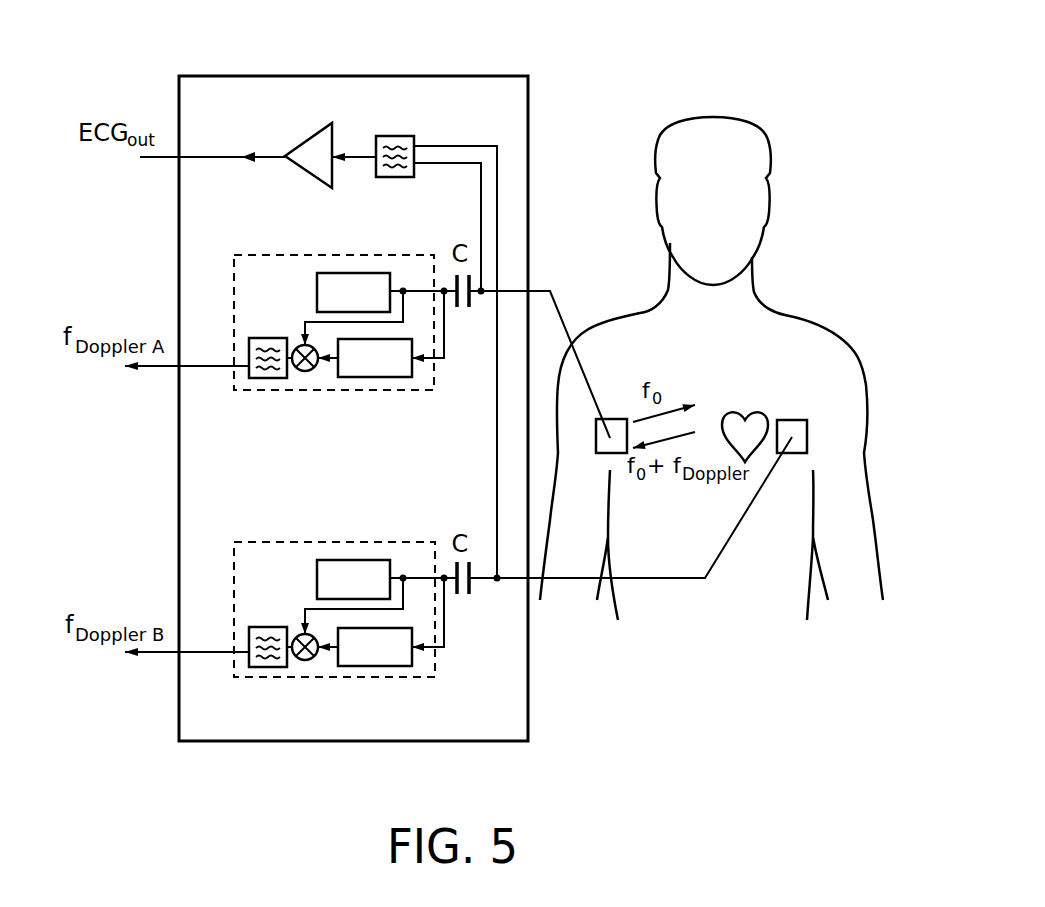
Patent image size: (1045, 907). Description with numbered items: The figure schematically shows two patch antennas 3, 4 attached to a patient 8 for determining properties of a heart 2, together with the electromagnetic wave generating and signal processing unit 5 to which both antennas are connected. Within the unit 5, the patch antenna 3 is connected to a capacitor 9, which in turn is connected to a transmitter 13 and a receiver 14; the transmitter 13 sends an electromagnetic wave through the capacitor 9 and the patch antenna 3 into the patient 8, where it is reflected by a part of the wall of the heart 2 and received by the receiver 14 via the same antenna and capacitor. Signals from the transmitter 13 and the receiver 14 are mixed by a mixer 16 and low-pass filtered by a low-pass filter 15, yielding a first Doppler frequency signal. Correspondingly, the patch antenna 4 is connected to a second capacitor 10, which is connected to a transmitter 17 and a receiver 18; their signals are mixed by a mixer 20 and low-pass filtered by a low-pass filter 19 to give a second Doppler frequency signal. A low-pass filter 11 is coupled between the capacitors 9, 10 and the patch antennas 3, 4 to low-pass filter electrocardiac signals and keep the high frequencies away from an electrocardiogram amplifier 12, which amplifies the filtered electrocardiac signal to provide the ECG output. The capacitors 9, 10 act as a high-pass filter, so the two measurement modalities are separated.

The heart 2 is at (757, 398).
The patch antenna 3 is at (596, 437).
The patch antenna 4 is at (807, 432).
The electromagnetic wave generating and signal processing unit 5 is at (365, 75).
The patient 8 is at (812, 318).
The capacitor 9 is at (465, 322).
The second capacitor 10 is at (472, 609).
The low-pass filter 11 is at (396, 136).
The electrocardiogram amplifier 12 is at (303, 139).
The transmitter 13 is at (350, 273).
The receiver 14 is at (387, 377).
The low-pass filter 15 is at (270, 338).
The mixer 16 is at (305, 372).
The transmitter 17 is at (352, 560).
The receiver 18 is at (397, 666).
The low-pass filter 19 is at (270, 627).
The mixer 20 is at (305, 660).